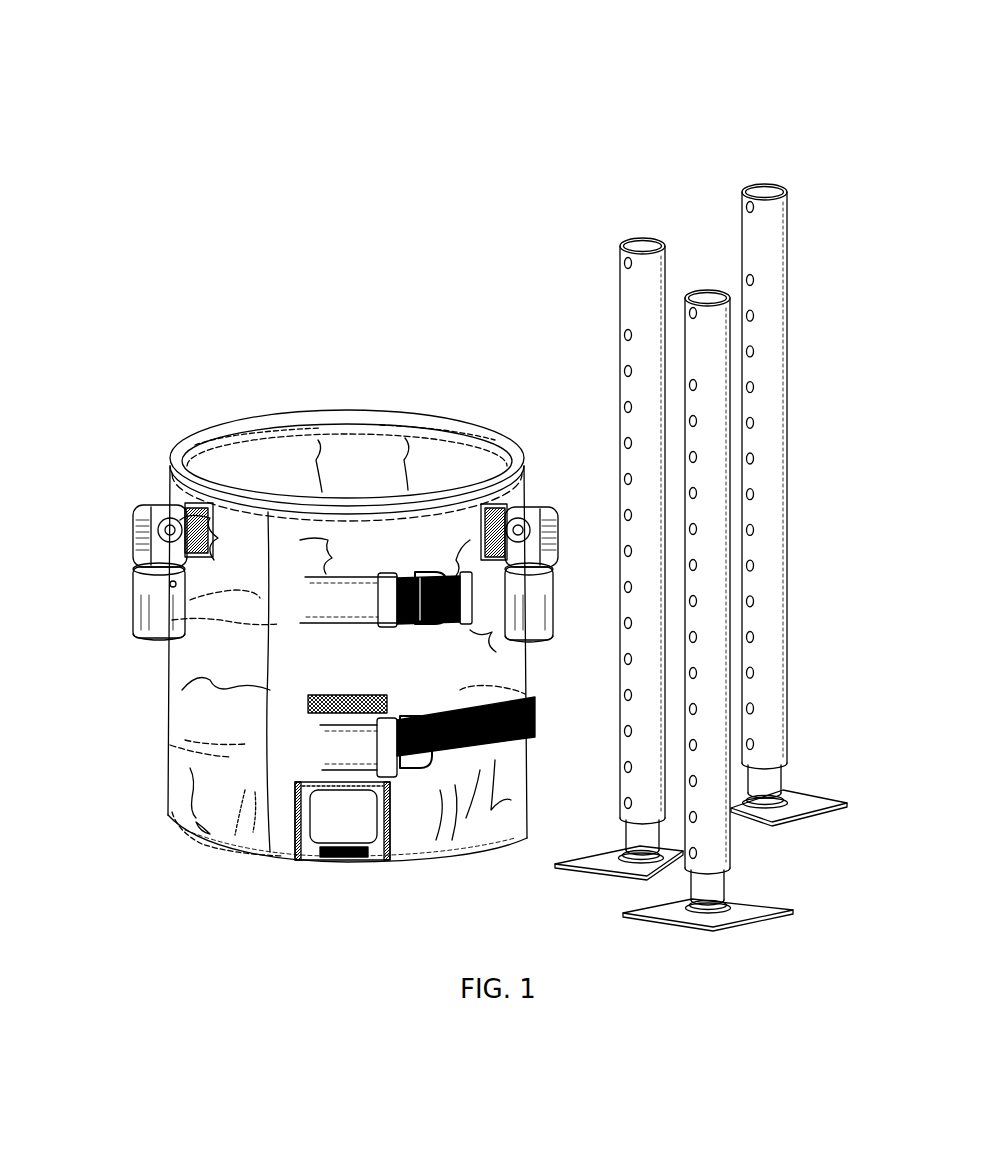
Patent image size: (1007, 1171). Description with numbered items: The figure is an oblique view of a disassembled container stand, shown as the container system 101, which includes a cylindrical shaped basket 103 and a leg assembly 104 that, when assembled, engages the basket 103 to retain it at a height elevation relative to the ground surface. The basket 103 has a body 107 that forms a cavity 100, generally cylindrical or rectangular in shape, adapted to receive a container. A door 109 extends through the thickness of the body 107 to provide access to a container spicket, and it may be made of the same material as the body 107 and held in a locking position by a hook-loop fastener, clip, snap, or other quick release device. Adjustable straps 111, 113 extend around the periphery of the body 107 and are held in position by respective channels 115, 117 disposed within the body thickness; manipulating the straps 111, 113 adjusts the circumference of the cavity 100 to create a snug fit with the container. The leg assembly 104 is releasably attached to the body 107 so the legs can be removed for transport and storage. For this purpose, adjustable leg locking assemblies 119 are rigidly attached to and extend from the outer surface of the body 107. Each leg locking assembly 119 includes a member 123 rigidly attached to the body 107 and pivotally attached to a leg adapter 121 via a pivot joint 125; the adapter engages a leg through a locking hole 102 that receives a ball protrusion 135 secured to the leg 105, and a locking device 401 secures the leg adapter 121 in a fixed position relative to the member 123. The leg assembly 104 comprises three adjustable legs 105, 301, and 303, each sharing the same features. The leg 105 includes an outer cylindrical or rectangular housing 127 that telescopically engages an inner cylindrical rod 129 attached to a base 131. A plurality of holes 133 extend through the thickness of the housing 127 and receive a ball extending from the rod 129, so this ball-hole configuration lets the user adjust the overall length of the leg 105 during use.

The container system 101 is at (110, 93).
The cavity 100 is at (383, 457).
The basket 103 is at (222, 355).
The leg assembly 104 is at (480, 190).
The leg 105 is at (577, 182).
The body 107 is at (167, 820).
The door 109 is at (377, 862).
The adjustable strap 111 is at (535, 713).
The adjustable strap 113 is at (497, 633).
The channel 115 is at (167, 745).
The channel 117 is at (222, 618).
The leg locking assembly 119 is at (127, 492).
The leg adapter 121 is at (130, 610).
The member 123 is at (172, 507).
The pivot joint 125 is at (130, 542).
The locking hole 102 is at (168, 583).
The locking device 401 is at (127, 530).
The housing 127 is at (618, 358).
The rod 129 is at (622, 833).
The base 131 is at (603, 873).
The holes 133 is at (625, 442).
The ball protrusion 135 is at (622, 263).
The leg 301 is at (705, 270).
The leg 303 is at (762, 168).